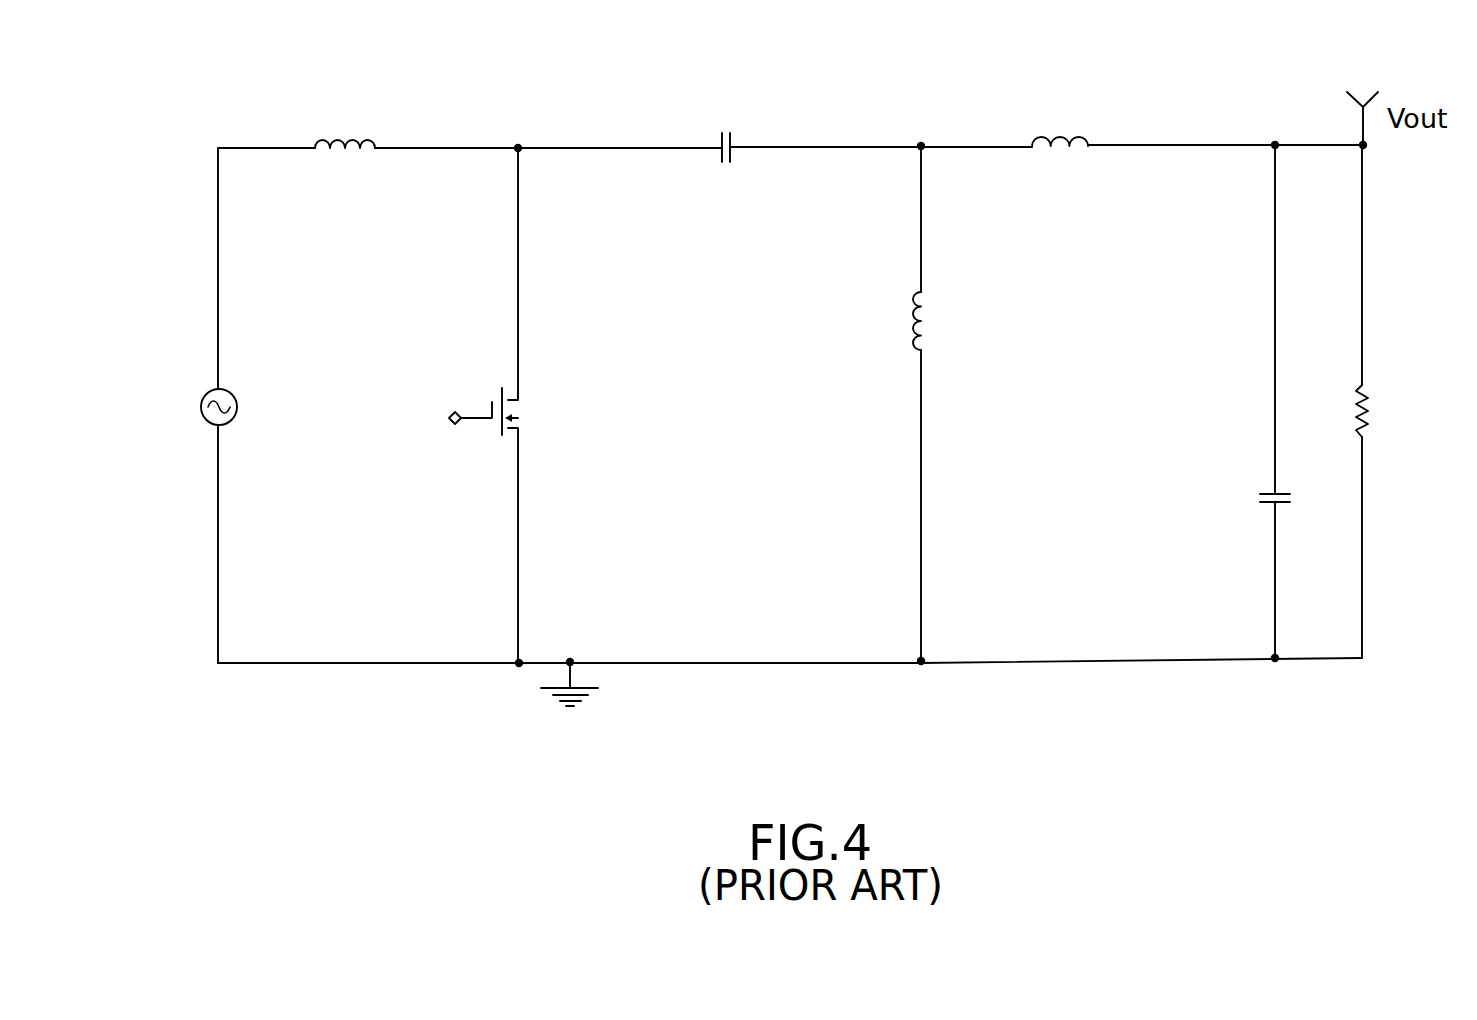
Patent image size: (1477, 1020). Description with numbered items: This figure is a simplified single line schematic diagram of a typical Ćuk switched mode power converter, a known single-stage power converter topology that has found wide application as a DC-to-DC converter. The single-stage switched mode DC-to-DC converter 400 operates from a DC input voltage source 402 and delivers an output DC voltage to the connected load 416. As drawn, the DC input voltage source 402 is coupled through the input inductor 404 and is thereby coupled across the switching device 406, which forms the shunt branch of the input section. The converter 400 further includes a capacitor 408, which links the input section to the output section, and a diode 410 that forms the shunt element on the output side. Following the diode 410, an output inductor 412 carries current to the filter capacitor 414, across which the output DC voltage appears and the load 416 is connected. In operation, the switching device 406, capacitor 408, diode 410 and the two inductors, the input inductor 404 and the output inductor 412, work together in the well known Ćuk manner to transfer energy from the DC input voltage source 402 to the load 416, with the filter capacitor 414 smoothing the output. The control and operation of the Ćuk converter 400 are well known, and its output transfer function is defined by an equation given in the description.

The single-stage switched mode DC-to-DC converter 400 is at (386, 733).
The DC input voltage source 402 is at (200, 407).
The input inductor 404 is at (343, 137).
The switching device 406 is at (522, 410).
The capacitor 408 is at (728, 132).
The diode 410 is at (912, 330).
The output inductor 412 is at (1057, 137).
The filter capacitor 414 is at (1258, 498).
The load 416 is at (1372, 420).